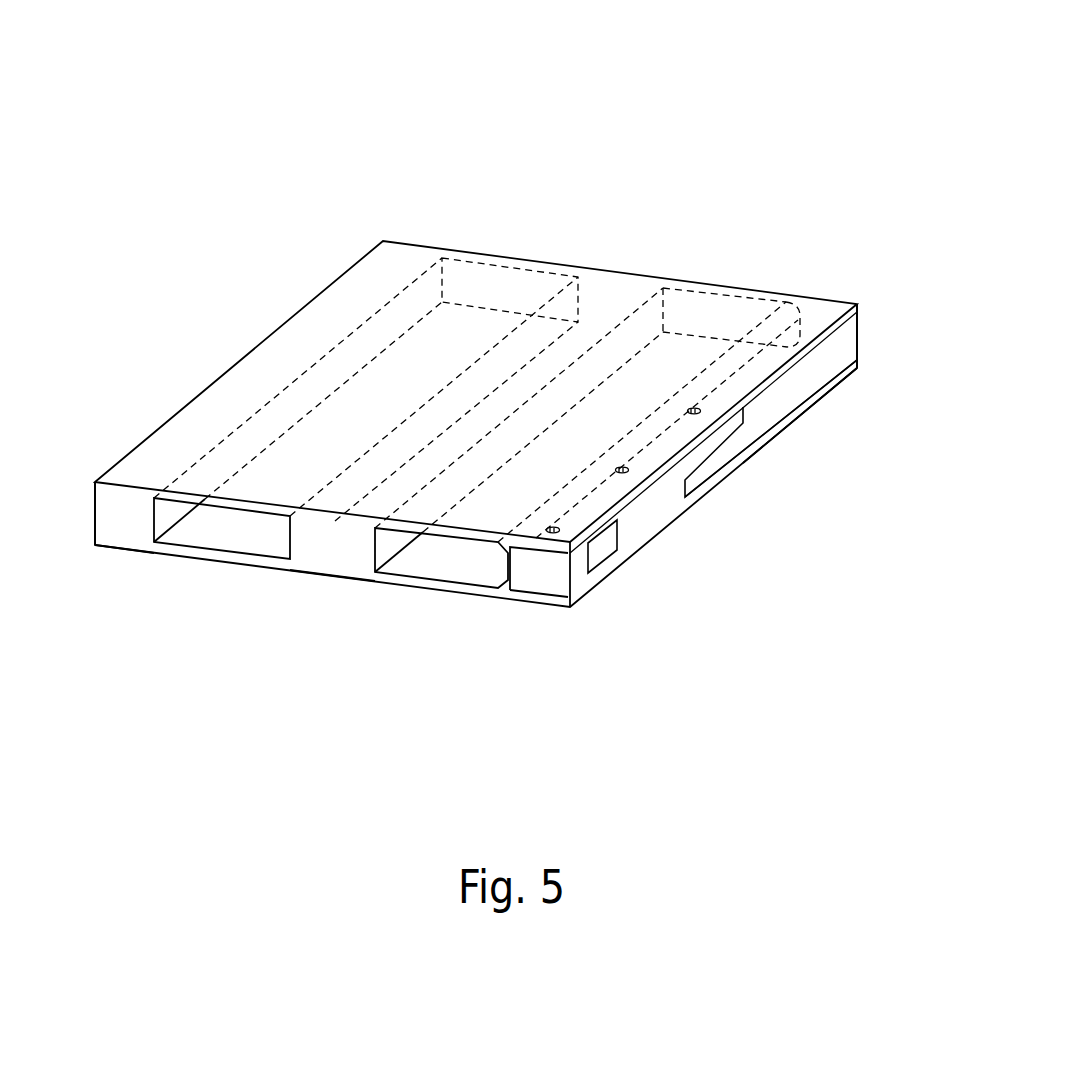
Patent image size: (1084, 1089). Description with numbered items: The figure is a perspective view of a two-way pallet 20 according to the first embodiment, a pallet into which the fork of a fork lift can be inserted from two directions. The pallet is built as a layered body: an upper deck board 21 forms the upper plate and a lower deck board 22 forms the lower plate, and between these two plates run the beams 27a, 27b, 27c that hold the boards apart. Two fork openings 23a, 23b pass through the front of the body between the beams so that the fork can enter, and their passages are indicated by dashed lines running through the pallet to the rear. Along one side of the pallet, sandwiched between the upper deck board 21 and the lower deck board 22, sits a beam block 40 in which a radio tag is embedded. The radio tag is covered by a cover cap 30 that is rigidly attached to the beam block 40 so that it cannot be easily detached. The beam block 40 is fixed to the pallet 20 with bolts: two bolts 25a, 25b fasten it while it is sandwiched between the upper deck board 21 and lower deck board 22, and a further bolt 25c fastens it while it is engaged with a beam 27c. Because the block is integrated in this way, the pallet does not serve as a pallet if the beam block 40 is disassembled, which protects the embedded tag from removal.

The two-way pallet 20 is at (564, 157).
The upper deck board 21 is at (286, 454).
The lower deck board 22 is at (220, 562).
The fork opening 23a is at (270, 545).
The fork opening 23b is at (486, 572).
The bolt 25a is at (560, 529).
The bolt 25b is at (626, 467).
The bolt 25c is at (700, 408).
The beam 27a is at (126, 523).
The beam 27b is at (338, 550).
The beam 27c is at (845, 345).
The cover cap 30 is at (603, 548).
The beam block 40 is at (662, 502).